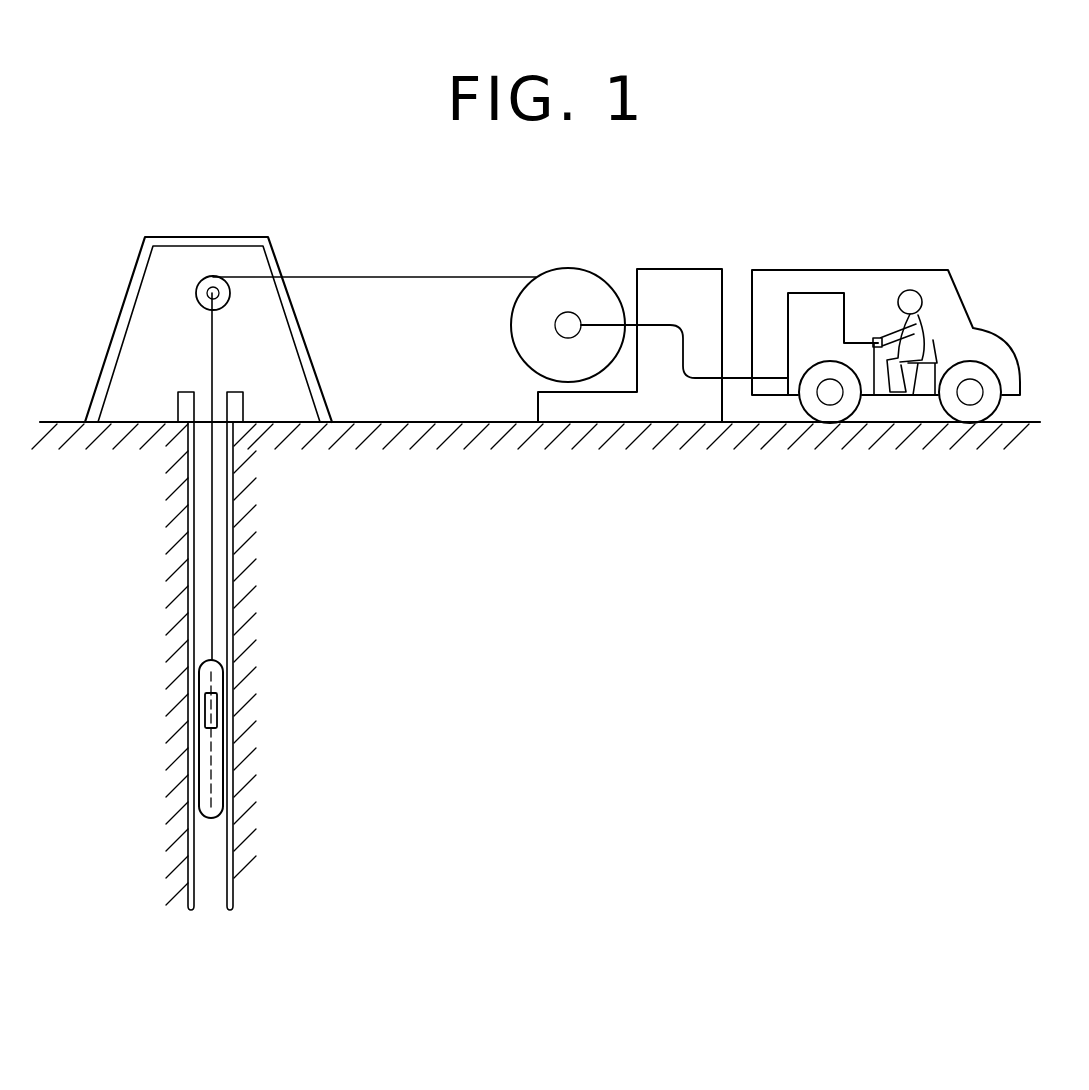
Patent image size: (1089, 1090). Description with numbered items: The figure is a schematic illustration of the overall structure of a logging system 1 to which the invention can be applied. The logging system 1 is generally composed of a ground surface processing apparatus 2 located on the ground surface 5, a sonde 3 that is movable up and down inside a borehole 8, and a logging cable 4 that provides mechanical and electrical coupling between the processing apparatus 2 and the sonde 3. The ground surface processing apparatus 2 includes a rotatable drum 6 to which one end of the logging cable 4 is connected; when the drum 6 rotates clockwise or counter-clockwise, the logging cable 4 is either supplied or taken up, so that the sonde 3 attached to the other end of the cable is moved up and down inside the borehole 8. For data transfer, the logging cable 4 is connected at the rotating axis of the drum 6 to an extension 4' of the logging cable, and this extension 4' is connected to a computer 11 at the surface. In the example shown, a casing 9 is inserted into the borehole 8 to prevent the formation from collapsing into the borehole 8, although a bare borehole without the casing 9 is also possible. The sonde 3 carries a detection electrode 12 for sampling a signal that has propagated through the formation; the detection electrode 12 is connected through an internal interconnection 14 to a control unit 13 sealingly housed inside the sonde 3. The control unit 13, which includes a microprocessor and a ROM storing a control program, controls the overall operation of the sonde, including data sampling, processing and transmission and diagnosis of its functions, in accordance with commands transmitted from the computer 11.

The logging system 1 is at (709, 241).
The ground surface processing apparatus 2 is at (759, 259).
The sonde 3 is at (218, 659).
The logging cable 4 is at (374, 244).
The extension of the logging cable 4' is at (684, 417).
The ground surface 5 is at (398, 422).
The rotatable drum 6 is at (577, 283).
The borehole 8 is at (212, 848).
The casing 9 is at (233, 897).
The computer 11 is at (830, 302).
The detection electrode 12 is at (218, 793).
The control unit 13 is at (212, 712).
The internal interconnection 14 is at (214, 757).